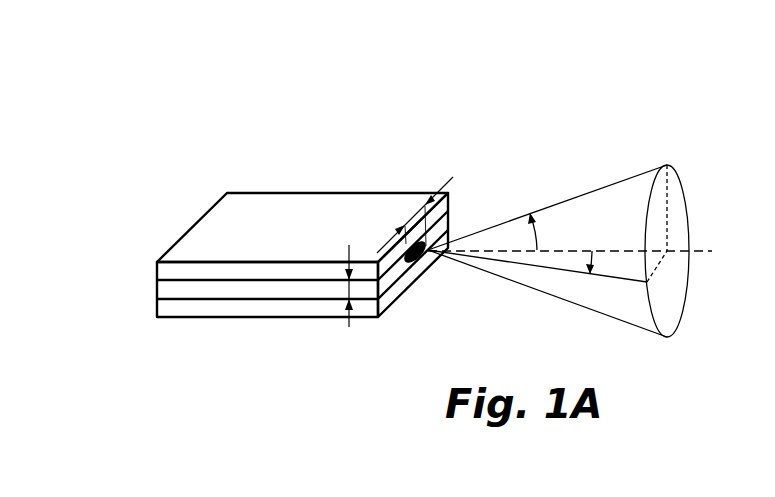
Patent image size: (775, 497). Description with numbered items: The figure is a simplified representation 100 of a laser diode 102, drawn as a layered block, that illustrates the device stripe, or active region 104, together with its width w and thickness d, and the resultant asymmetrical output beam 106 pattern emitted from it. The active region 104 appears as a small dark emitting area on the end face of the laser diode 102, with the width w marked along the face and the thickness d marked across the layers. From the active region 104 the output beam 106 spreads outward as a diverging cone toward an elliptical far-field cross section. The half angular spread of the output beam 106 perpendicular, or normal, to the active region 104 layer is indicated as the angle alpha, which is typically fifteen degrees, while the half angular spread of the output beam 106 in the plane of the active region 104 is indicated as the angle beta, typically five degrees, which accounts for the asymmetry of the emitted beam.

The simplified representation 100 is at (443, 360).
The laser diode 102 is at (347, 193).
The active region 104 is at (421, 256).
The output beam 106 is at (679, 180).